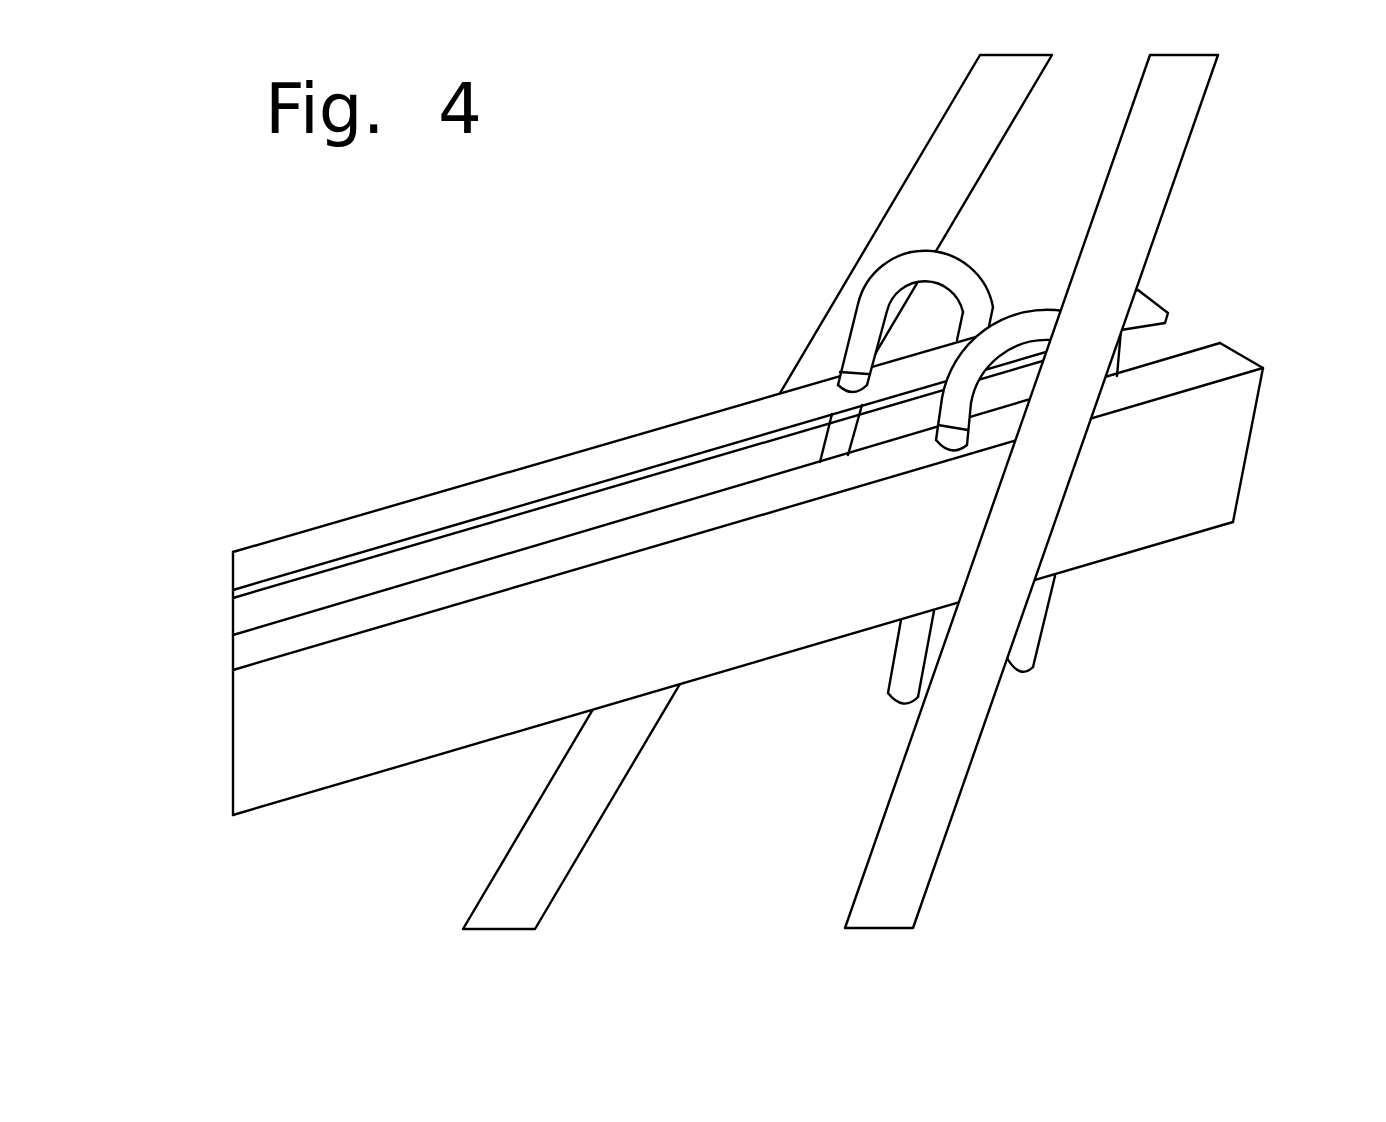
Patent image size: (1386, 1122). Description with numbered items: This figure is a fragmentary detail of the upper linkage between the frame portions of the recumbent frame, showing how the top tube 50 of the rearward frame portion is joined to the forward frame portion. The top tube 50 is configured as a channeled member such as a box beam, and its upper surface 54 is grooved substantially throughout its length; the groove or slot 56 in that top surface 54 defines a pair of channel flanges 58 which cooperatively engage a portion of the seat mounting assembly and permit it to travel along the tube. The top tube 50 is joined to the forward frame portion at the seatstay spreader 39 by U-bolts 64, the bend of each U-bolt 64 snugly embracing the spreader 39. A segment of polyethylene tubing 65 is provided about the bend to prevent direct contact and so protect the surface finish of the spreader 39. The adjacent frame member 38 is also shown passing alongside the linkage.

The leg 38 is at (1175, 187).
The seatstay spreader 39 is at (997, 323).
The top tube 50 is at (748, 552).
The upper surface 54 is at (547, 433).
The groove or slot 56 is at (1183, 330).
The channel flanges 58 is at (378, 610).
The U-bolt 64 is at (840, 372).
The polyethylene tubing 65 is at (893, 278).